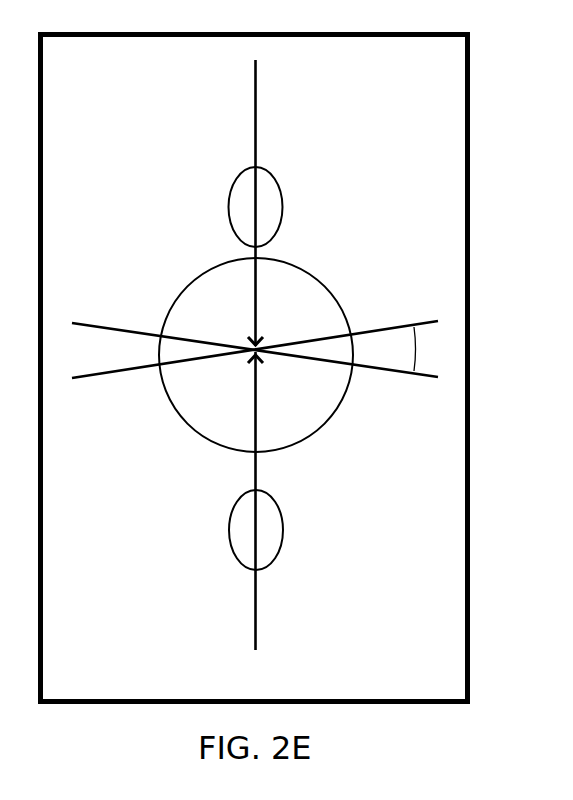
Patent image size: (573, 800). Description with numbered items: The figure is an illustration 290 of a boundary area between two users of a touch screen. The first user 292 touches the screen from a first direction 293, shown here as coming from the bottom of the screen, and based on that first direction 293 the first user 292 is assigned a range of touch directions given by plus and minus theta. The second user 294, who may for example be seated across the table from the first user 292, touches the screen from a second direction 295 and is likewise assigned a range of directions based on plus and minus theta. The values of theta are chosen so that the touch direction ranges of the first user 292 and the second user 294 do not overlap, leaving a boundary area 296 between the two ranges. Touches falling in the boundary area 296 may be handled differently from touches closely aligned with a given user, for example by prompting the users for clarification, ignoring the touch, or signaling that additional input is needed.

The illustration of boundary area between two users 290 is at (400, 31).
The User #1 292 is at (299, 554).
The first direction 293 is at (254, 631).
The User #2 294 is at (304, 206).
The second direction 295 is at (256, 92).
The boundary area 296 is at (418, 349).